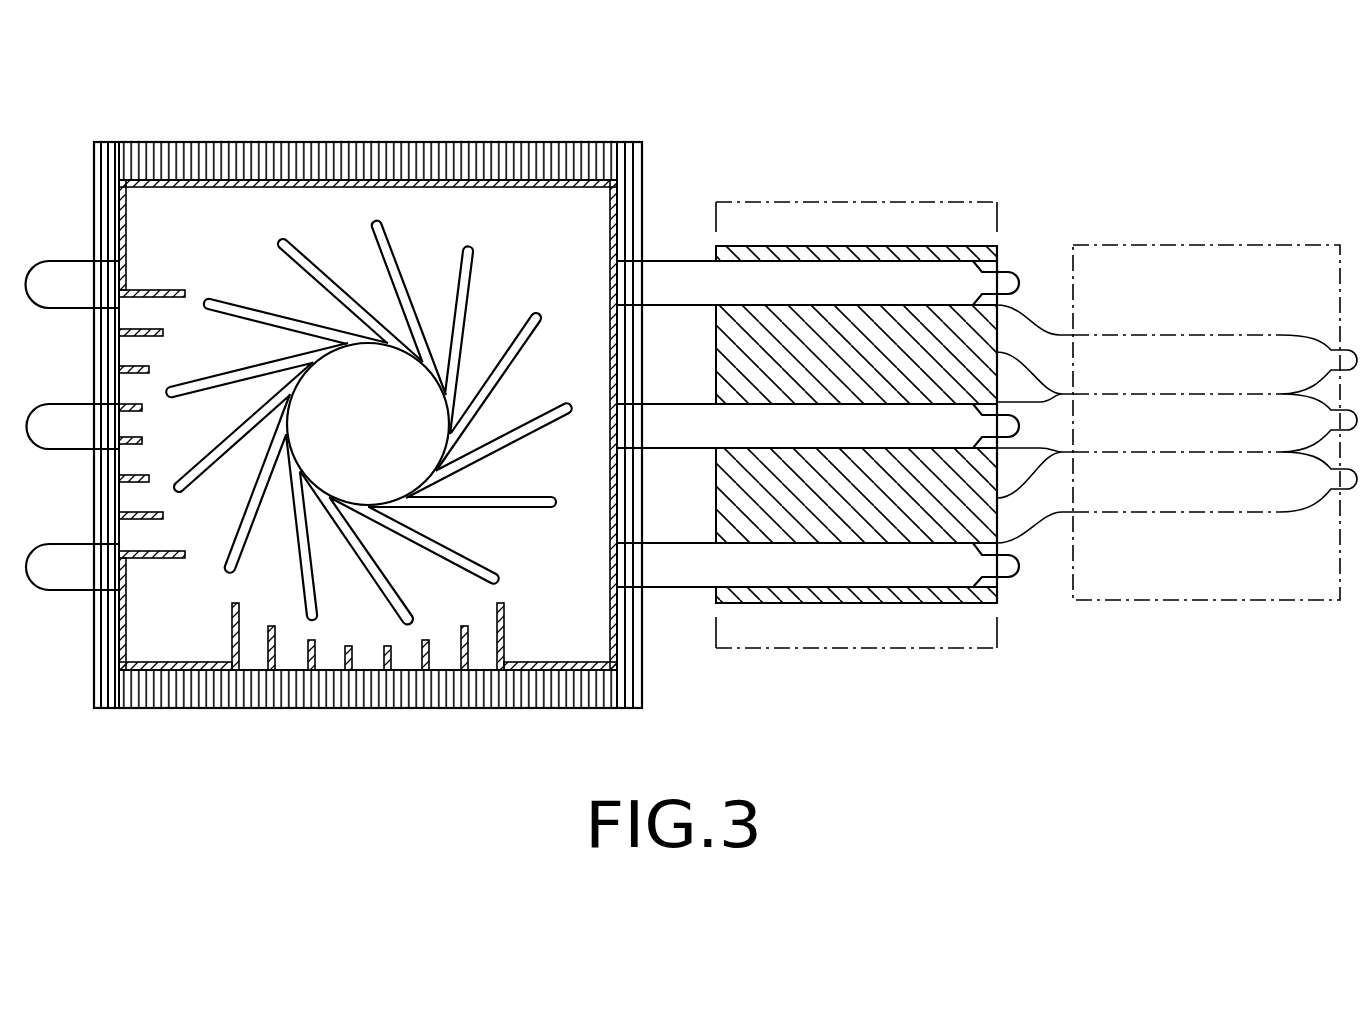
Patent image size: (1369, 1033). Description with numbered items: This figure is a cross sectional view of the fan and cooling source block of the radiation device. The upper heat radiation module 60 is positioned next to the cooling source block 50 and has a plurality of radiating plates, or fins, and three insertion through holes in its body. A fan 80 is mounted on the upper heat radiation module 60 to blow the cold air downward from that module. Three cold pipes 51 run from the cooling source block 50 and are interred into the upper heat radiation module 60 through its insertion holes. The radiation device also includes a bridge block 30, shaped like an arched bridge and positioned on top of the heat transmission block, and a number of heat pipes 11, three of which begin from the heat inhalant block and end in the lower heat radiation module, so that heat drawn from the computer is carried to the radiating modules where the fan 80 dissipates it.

The heat pipes 11 is at (1176, 362).
The bridge block 30 is at (927, 200).
The cooling source block 50 is at (866, 333).
The cold pipes 51 is at (778, 273).
The upper heat radiation module 60 is at (353, 153).
The fan 80 is at (222, 228).